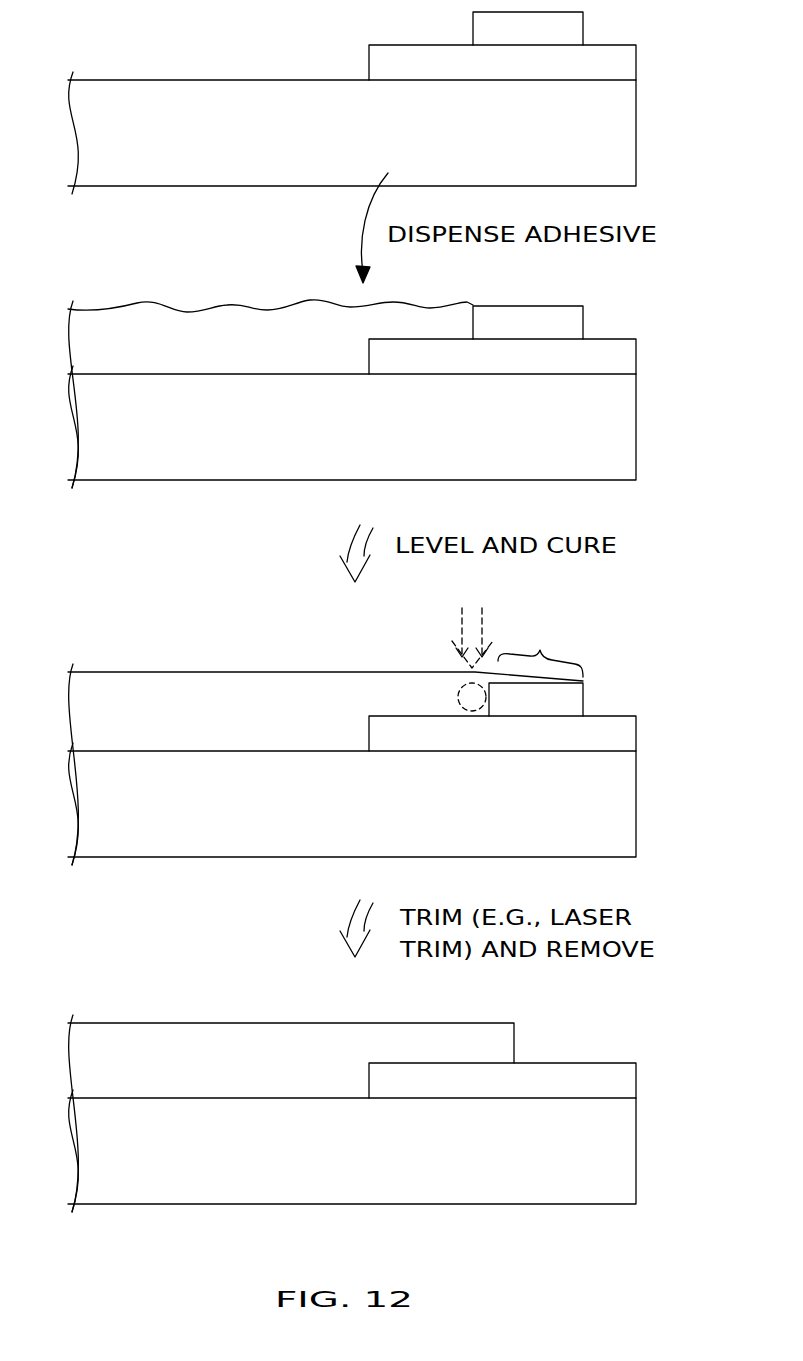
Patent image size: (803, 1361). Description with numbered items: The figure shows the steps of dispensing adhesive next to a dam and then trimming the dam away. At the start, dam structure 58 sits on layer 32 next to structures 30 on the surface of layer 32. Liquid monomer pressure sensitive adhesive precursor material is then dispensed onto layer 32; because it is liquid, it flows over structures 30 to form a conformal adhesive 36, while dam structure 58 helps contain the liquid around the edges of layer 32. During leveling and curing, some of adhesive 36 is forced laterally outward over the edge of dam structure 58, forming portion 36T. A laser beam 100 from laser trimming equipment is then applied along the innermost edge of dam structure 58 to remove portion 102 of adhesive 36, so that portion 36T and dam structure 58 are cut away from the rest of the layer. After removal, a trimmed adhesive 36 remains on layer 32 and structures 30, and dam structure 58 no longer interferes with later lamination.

The structures 30 is at (627, 71).
The layer 32 is at (627, 137).
The adhesive 36 is at (218, 318).
The portion of adhesive layer 36T is at (540, 649).
The dam structure 58 is at (578, 25).
The laser beam 100 is at (460, 629).
The portion of adhesive layer 102 is at (458, 700).